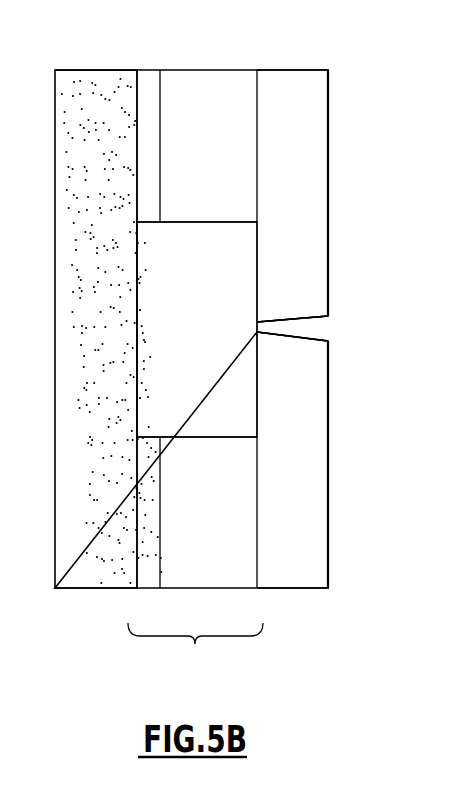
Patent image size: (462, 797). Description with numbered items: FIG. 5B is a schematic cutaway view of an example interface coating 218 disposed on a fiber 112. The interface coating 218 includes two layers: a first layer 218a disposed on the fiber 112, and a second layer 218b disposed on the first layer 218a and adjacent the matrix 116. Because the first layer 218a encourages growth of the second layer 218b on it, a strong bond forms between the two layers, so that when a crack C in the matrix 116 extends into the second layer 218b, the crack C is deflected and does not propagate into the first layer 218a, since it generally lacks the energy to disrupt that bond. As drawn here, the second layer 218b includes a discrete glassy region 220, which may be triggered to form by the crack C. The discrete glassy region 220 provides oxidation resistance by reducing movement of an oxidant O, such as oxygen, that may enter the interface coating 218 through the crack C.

The fiber 112 is at (90, 571).
The matrix 116 is at (296, 573).
The interface coating 218 is at (195, 650).
The first layer 218a is at (145, 76).
The second layer 218b is at (228, 70).
The discrete glassy regions 220 is at (243, 252).
The oxidant O is at (266, 323).
The crack C is at (344, 349).